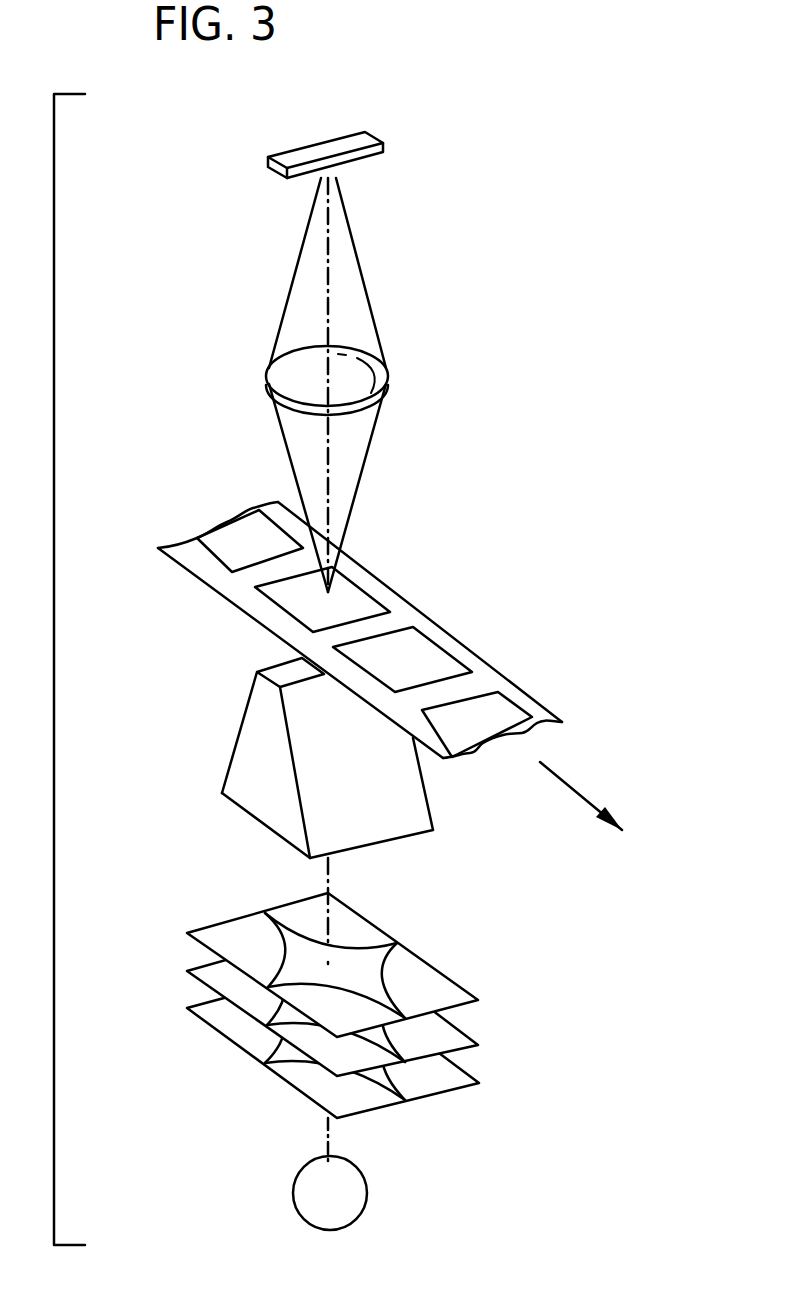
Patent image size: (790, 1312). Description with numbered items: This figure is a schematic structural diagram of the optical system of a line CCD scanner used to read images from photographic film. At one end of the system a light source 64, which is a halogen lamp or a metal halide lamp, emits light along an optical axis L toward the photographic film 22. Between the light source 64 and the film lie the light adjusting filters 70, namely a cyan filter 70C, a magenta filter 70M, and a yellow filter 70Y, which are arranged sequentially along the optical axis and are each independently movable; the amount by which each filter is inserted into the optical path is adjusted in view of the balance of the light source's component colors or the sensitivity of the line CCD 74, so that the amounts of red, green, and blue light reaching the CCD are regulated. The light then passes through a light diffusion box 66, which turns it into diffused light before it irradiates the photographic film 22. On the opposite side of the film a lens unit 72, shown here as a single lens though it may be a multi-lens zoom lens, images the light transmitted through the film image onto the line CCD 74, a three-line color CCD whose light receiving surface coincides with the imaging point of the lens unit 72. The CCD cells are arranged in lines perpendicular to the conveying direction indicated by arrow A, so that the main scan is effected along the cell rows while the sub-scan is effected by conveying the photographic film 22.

The line CCD 74 is at (370, 131).
The lens unit 72 is at (233, 377).
The photographic film 22 is at (183, 571).
The light diffusion box 66 is at (243, 717).
The light adjusting filters 70 is at (423, 1005).
The yellow light adjusting filter 70Y is at (464, 990).
The magenta light adjusting filter 70M is at (467, 1034).
The cyan light adjusting filter 70C is at (470, 1087).
The light source 64 is at (293, 1189).
The optical axis L is at (326, 1140).
The film conveying direction A is at (576, 793).